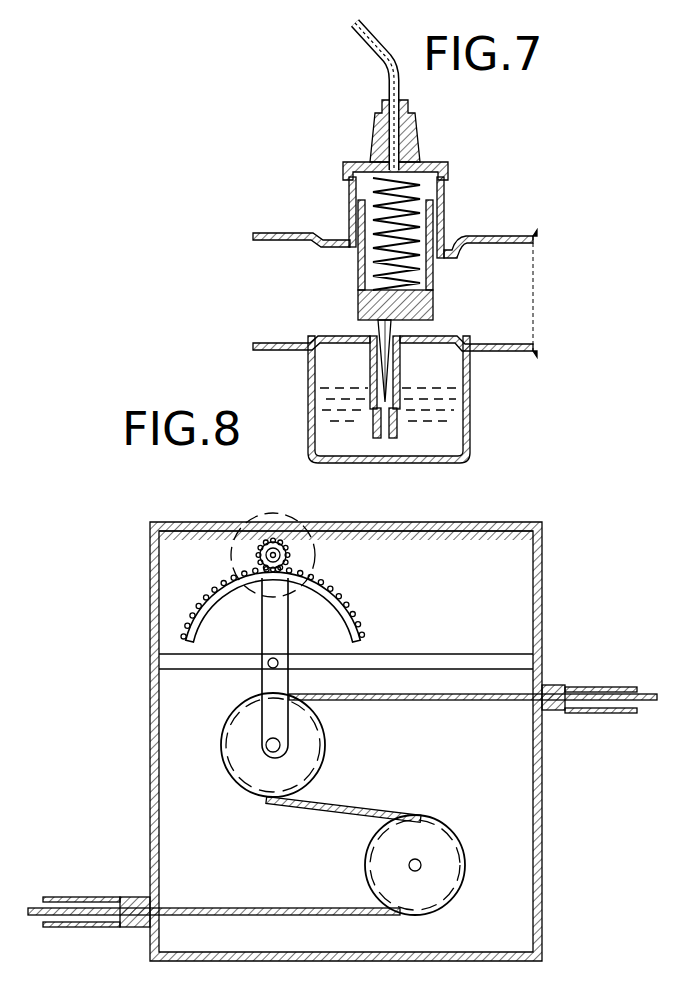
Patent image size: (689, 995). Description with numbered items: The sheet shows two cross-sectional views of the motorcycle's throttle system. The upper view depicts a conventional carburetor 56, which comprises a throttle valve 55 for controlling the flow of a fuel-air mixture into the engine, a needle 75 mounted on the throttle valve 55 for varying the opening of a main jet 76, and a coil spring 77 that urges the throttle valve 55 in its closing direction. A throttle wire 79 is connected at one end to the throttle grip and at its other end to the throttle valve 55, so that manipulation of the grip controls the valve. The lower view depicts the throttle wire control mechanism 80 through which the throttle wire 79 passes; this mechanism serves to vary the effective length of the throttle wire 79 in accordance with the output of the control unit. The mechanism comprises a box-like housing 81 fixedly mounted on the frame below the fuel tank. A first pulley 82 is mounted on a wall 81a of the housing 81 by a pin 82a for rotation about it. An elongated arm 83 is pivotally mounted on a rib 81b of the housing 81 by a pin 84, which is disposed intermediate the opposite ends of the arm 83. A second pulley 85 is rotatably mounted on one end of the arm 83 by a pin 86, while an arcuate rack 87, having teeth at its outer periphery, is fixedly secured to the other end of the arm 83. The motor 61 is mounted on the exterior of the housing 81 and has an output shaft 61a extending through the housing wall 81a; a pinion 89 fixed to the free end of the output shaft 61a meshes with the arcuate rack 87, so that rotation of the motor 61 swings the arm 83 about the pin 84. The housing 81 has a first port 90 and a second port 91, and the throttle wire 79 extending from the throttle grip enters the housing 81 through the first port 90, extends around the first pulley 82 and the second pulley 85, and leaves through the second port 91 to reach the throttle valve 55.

In FIG. 7, the carburetor 56 is at (276, 222).
In FIG. 7, the throttle wire 79 is at (368, 37).
In FIG. 8, the throttle wire 79 is at (275, 907).
In FIG. 7, the coil spring 77 is at (418, 193).
In FIG. 7, the throttle valve 55 is at (436, 290).
In FIG. 7, the needle 75 is at (373, 325).
In FIG. 7, the main jet 76 is at (398, 432).
In FIG. 8, the throttle wire control mechanism 80 is at (143, 530).
In FIG. 8, the housing 81 is at (545, 588).
In FIG. 8, the wall 81a is at (505, 550).
In FIG. 8, the rib 81b is at (455, 660).
In FIG. 8, the motor 61 is at (256, 518).
In FIG. 8, the output shaft 61a is at (259, 557).
In FIG. 8, the pinion 89 is at (289, 556).
In FIG. 8, the arcuate rack 87 is at (357, 617).
In FIG. 8, the elongated arm 83 is at (280, 722).
In FIG. 8, the pin 84 is at (270, 668).
In FIG. 8, the second pulley 85 is at (240, 768).
In FIG. 8, the pin 86 is at (282, 750).
In FIG. 8, the first pulley 82 is at (440, 838).
In FIG. 8, the pin 82a is at (421, 866).
In FIG. 8, the first port 90 is at (108, 897).
In FIG. 8, the second port 91 is at (577, 687).